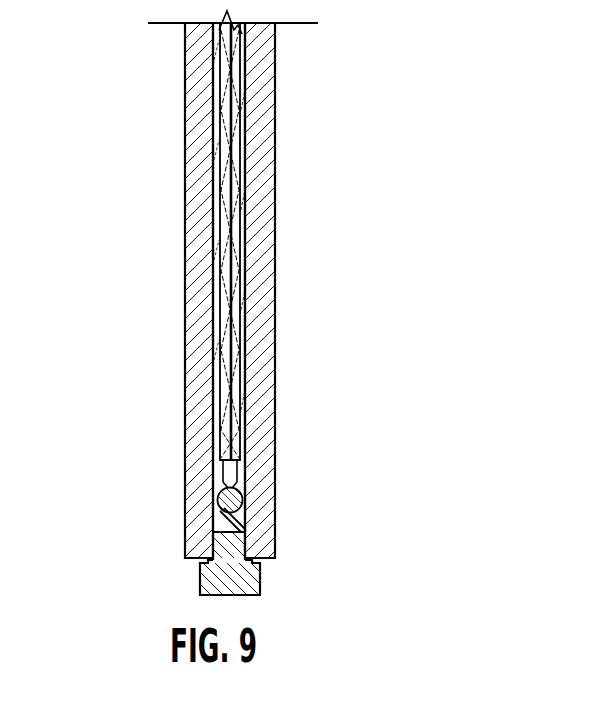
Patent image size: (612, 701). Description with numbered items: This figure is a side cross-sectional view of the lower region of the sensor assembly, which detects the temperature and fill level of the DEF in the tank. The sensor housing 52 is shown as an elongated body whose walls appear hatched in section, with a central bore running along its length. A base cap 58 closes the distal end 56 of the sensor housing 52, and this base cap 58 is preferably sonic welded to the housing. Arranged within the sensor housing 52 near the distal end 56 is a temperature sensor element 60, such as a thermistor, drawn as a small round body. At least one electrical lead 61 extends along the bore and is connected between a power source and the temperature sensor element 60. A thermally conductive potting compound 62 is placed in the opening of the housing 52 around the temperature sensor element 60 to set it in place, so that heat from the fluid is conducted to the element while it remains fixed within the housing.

The sensor housing 52 is at (186, 180).
The distal end 56 is at (198, 526).
The base cap 58 is at (232, 586).
The temperature sensor element 60 is at (218, 505).
The electrical lead 61 is at (247, 341).
The thermally conductive potting compound 62 is at (247, 481).